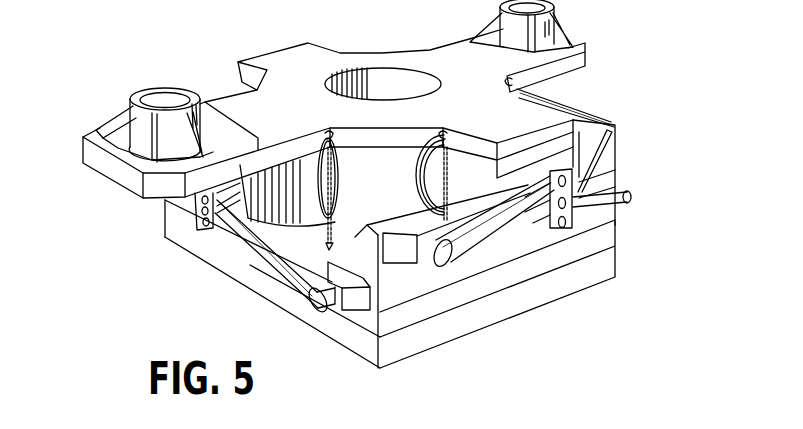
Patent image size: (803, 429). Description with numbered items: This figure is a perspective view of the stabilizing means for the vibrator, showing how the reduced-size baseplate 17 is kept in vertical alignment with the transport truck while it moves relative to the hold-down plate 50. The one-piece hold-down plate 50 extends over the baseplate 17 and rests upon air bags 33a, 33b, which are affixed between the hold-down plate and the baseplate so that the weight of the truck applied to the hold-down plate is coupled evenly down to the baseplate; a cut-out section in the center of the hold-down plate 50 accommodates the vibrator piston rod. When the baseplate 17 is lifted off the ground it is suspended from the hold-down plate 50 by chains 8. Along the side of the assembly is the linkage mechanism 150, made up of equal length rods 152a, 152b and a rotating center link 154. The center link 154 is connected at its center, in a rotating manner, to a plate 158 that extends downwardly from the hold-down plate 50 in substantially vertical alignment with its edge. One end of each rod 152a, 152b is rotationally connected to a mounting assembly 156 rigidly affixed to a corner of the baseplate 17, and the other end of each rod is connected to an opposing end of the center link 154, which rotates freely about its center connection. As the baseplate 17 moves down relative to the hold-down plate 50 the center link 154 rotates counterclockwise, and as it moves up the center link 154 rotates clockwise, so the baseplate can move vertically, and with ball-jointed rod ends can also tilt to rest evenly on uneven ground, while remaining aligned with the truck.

The hold-down plate 50 is at (112, 172).
The plate 158 is at (482, 173).
The chains 8 is at (330, 242).
The air bag 33a is at (308, 168).
The air bag 33b is at (430, 167).
The linkage mechanism 150 is at (572, 242).
The mounting assembly 156 is at (613, 148).
The center link 154 is at (550, 230).
The equal length rod 152a is at (468, 232).
The equal length rod 152b is at (270, 270).
The baseplate 17 is at (603, 247).